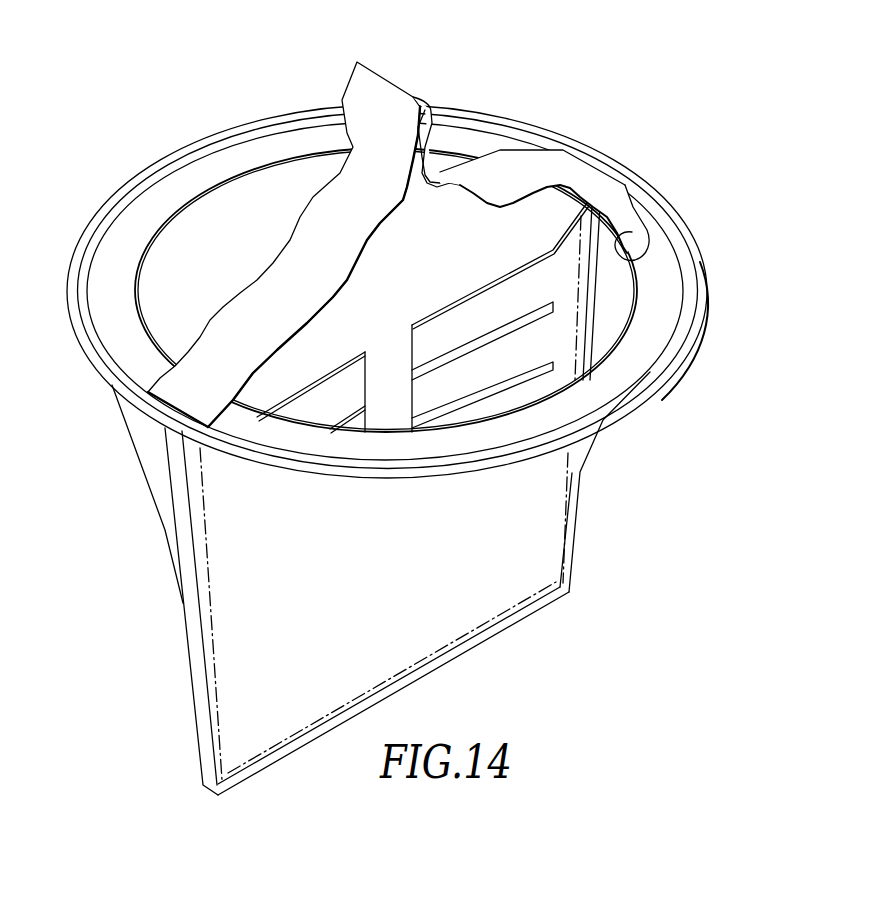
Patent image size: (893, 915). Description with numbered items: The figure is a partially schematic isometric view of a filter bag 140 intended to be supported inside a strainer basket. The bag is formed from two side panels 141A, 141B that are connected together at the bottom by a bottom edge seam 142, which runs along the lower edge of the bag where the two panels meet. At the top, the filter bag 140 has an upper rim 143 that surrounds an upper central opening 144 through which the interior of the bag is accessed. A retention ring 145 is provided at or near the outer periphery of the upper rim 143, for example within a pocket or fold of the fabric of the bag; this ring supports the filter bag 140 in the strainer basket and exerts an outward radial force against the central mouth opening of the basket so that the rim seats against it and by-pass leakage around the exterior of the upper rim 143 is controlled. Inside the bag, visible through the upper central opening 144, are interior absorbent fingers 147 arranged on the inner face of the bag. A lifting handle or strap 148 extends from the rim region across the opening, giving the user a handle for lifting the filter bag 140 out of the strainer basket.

The filter bag 140 is at (146, 98).
The side panel 141A is at (497, 598).
The side panel 141B is at (150, 458).
The bottom edge seam 142 is at (240, 788).
The upper rim 143 is at (664, 292).
The upper central opening 144 is at (644, 240).
The retention ring 145 is at (696, 327).
The interior absorbent fingers 147 is at (420, 393).
The lifting handle or strap 148 is at (378, 88).